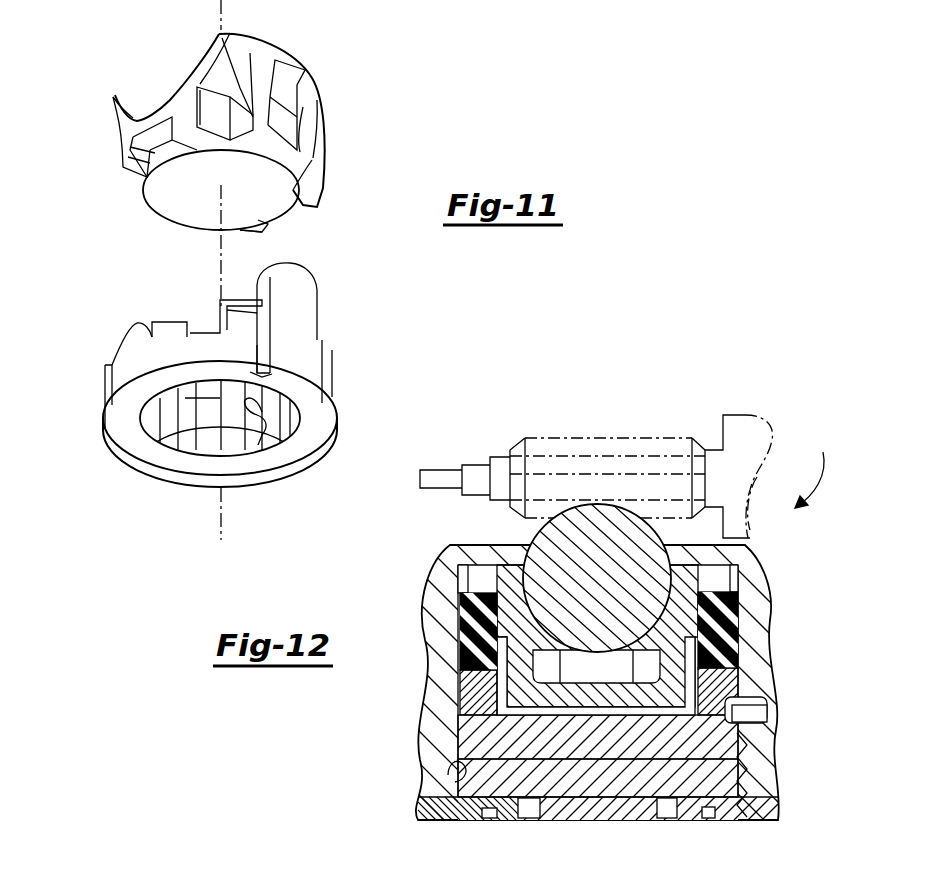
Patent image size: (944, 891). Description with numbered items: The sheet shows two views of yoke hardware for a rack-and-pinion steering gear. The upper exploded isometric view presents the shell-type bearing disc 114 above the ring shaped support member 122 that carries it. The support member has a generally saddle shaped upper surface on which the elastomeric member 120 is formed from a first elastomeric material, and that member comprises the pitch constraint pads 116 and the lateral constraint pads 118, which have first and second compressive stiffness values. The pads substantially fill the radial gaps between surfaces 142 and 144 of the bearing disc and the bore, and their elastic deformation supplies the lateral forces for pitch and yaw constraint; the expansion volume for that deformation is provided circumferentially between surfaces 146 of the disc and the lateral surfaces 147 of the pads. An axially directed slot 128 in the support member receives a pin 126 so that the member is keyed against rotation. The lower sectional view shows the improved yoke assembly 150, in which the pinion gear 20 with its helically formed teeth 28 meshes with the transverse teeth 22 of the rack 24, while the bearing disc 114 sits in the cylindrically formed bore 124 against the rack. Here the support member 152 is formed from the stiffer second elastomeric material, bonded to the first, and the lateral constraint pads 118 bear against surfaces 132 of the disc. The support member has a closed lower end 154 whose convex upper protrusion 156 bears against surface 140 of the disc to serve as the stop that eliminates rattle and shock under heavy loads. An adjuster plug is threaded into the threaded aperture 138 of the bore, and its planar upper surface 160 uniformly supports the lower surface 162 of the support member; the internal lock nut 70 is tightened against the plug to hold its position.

In FIG. 12, the pinion gear 20 is at (608, 443).
In FIG. 12, the teeth 22 is at (229, 890).
In FIG. 12, the rack 24 is at (530, 540).
In FIG. 12, the helically formed teeth 28 is at (672, 440).
In FIG. 12, the internal lock nut 70 is at (742, 816).
In FIG. 11, the shell-type bearing disc 114 is at (258, 47).
In FIG. 12, the shell-type bearing disc 114 is at (740, 572).
In FIG. 11, the pitch constraint pads 116 is at (123, 338).
In FIG. 11, the lateral constraint pads 118 is at (317, 290).
In FIG. 12, the lateral constraint pads 118 is at (440, 640).
In FIG. 11, the elastomeric member 120 is at (187, 330).
In FIG. 11, the ring shaped support member 122 is at (322, 383).
In FIG. 12, the bore 124 is at (447, 732).
In FIG. 12, the pin 126 is at (757, 713).
In FIG. 11, the axially directed slot 128 is at (265, 343).
In FIG. 12, the axially directed slot 128 is at (745, 723).
In FIG. 12, the surfaces 132 is at (500, 603).
In FIG. 12, the threaded aperture 138 is at (448, 782).
In FIG. 11, the surface 140 is at (273, 200).
In FIG. 12, the surface 140 is at (518, 710).
In FIG. 11, the surfaces 142 is at (165, 147).
In FIG. 11, the surfaces 144 is at (285, 95).
In FIG. 11, the surfaces 146 is at (303, 108).
In FIG. 11, the lateral surfaces 147 is at (155, 330).
In FIG. 12, the improved yoke assembly 150 is at (556, 877).
In FIG. 12, the support member 152 is at (732, 683).
In FIG. 12, the closed lower end 154 is at (593, 757).
In FIG. 12, the convex upper protrusion 156 is at (660, 743).
In FIG. 12, the planar upper surface 160 is at (587, 757).
In FIG. 12, the lower surface 162 is at (513, 713).